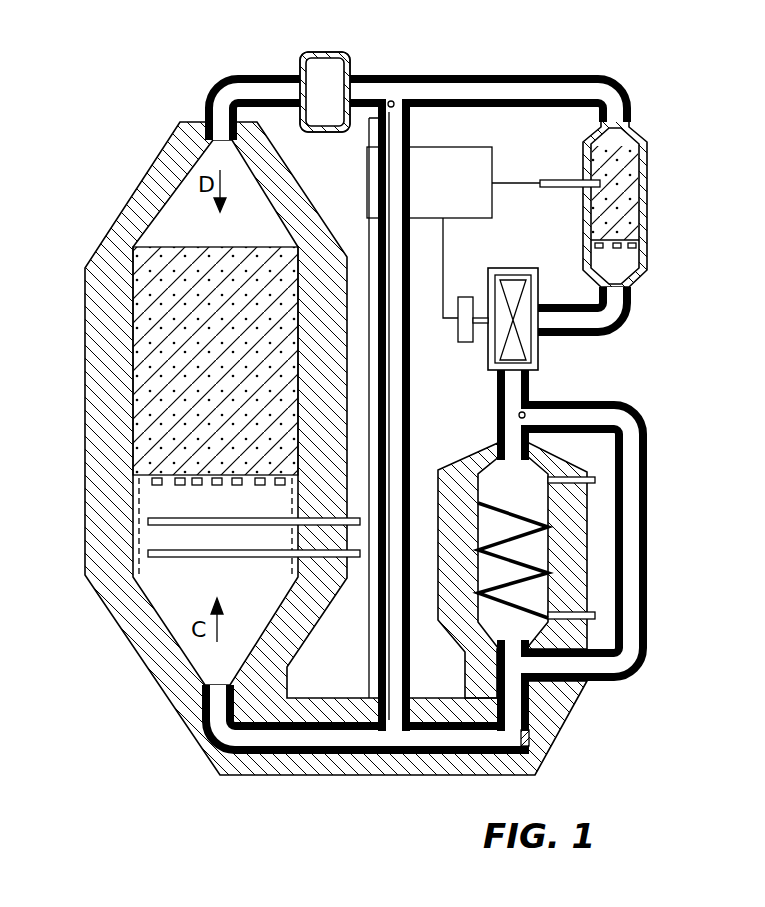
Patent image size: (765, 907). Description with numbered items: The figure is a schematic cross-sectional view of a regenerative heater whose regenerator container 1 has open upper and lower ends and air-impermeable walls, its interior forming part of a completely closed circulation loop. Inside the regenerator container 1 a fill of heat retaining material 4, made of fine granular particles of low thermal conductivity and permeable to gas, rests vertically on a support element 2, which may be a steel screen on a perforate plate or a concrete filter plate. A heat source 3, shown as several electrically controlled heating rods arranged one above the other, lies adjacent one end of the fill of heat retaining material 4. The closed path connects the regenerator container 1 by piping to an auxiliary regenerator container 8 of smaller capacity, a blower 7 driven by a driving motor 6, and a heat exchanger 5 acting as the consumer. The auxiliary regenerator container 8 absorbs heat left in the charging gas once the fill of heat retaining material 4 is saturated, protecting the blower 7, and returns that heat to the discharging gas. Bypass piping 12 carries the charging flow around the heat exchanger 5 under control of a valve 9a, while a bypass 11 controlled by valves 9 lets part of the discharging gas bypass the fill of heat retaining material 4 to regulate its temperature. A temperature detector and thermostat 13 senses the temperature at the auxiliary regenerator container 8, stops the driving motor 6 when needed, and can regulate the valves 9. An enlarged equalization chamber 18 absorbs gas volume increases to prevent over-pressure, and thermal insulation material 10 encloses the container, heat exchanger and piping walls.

The regenerator container 1 is at (124, 292).
The support element 2 is at (180, 489).
The heat source 3 is at (192, 552).
The fill of heat retaining material 4 is at (157, 348).
The heat exchanger 5 is at (508, 474).
The driving motor 6 is at (470, 296).
The blower 7 is at (513, 290).
The auxiliary regenerator container 8 is at (648, 151).
The valves 9 is at (393, 102).
The valve 9a is at (525, 413).
The thermal insulation material 10 is at (293, 196).
The bypass 11 is at (413, 192).
The bypass piping 12 is at (650, 672).
The temperature detector and thermostat 13 is at (560, 178).
The equalization chamber 18 is at (325, 52).